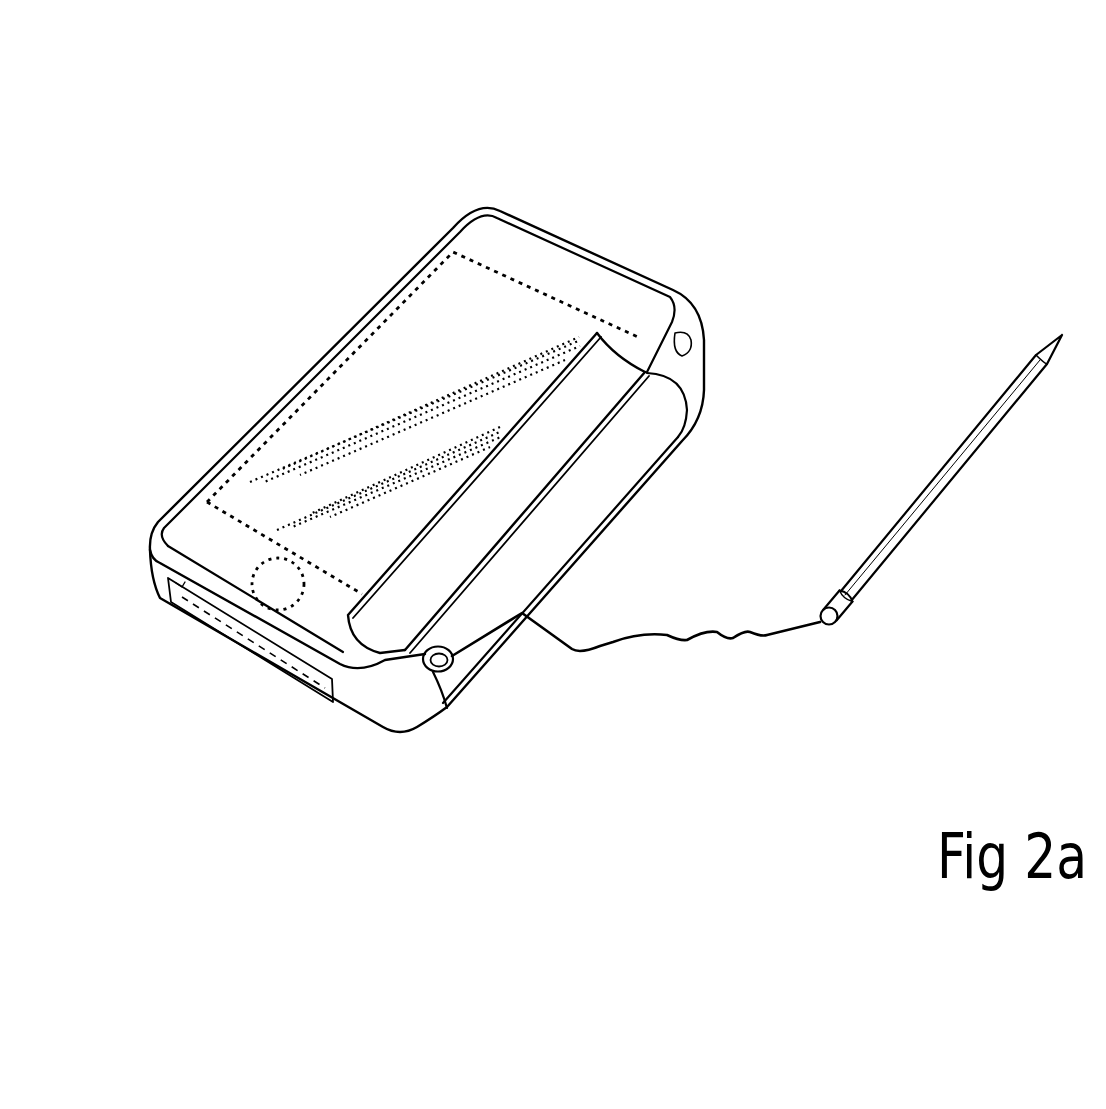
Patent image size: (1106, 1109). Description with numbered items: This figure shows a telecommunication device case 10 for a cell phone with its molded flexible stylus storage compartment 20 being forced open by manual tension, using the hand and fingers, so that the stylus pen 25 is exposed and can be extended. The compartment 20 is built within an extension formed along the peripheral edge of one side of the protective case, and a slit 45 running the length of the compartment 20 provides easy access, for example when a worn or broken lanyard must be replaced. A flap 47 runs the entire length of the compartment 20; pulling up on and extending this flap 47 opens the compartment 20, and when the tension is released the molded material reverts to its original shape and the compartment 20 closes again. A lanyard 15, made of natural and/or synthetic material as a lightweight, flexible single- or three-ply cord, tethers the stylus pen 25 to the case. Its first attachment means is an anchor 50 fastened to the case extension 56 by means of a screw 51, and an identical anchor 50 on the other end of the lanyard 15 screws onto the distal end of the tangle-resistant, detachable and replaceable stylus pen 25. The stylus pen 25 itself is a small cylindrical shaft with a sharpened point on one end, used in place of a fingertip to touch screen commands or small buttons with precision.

The telecommunication device case 10 is at (275, 305).
The flexible stylus storage compartment 20 is at (660, 413).
The slit 45 is at (492, 663).
The flap 47 is at (547, 453).
The screw 51 is at (369, 758).
The extension 56 is at (428, 667).
The lanyard 15 is at (778, 620).
The anchor 50 is at (448, 708).
The stylus pen 25 is at (947, 520).